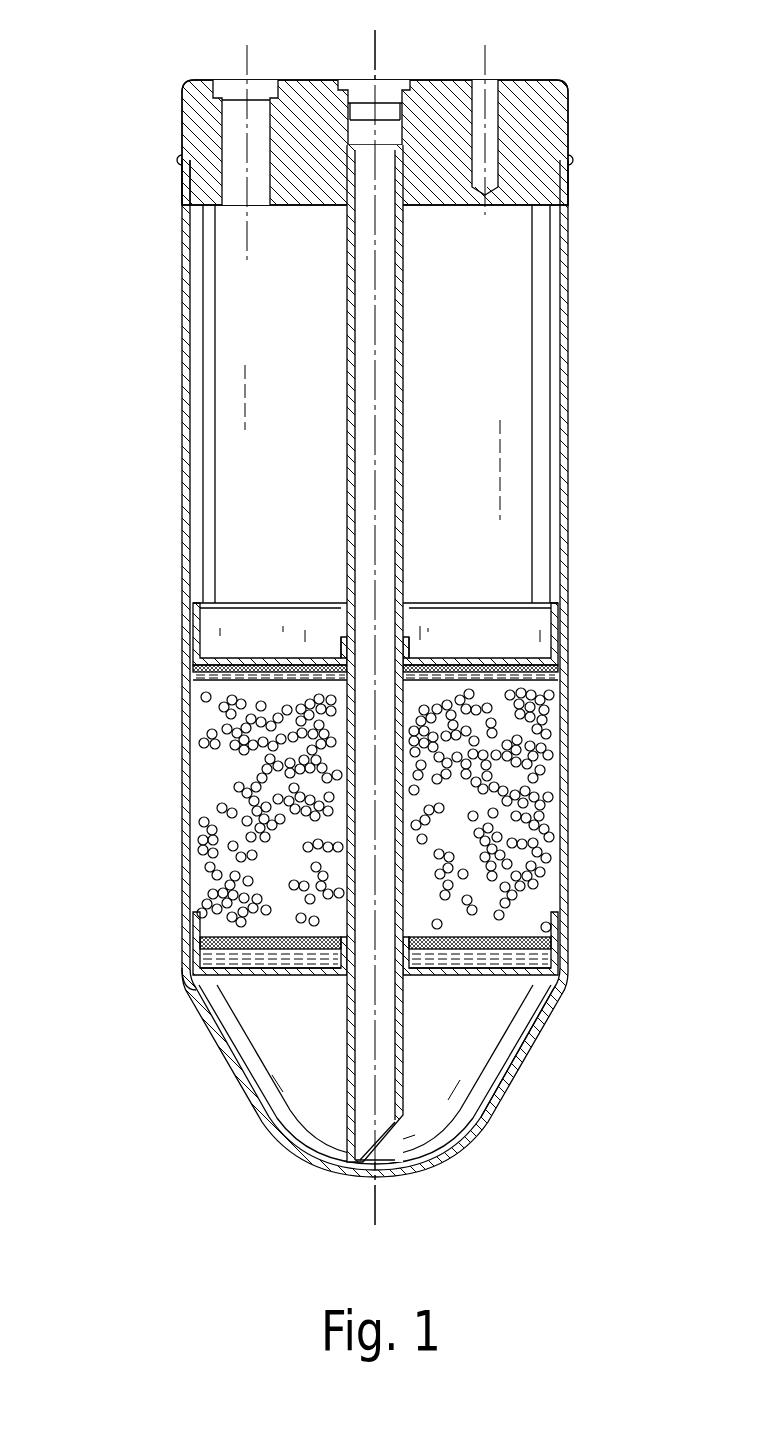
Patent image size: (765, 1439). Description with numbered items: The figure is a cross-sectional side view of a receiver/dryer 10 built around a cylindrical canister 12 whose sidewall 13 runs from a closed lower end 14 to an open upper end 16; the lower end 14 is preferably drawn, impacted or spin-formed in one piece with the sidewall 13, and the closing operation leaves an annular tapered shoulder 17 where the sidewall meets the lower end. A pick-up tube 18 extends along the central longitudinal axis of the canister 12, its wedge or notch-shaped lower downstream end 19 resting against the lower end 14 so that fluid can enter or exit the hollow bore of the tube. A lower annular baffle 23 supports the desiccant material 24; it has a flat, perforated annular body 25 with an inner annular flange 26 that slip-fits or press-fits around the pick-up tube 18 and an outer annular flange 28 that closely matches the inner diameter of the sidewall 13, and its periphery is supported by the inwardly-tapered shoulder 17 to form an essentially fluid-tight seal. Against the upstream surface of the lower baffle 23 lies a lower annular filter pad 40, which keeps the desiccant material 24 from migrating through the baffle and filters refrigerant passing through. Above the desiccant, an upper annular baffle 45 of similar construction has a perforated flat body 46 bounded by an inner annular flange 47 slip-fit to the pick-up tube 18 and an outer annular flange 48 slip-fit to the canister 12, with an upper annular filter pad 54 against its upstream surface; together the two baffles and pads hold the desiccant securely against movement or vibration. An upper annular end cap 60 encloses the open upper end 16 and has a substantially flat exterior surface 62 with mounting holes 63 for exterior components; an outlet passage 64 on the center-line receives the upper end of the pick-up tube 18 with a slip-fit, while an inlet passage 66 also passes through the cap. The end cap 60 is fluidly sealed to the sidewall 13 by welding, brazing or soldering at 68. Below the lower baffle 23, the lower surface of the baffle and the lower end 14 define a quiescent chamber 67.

The receiver/dryer 10 is at (100, 306).
The cylindrical canister 12 is at (185, 410).
The sidewall 13 is at (190, 518).
The lower closed end 14 is at (267, 1115).
The upper open end 16 is at (185, 193).
The annular tapered shoulder 17 is at (194, 990).
The pick-up tube 18 is at (350, 500).
The lower downstream end 19 is at (386, 1150).
The lower annular baffle 23 is at (290, 982).
The desiccant material 24 is at (556, 810).
The flat annular body 25 is at (498, 978).
The inner annular flange 26 is at (421, 963).
The outer annular flange 28 is at (195, 935).
The lower annular filter pad 40 is at (566, 955).
The upper annular baffle 45 is at (196, 636).
The perforated flat body 46 is at (458, 655).
The inner annular flange 47 is at (340, 652).
The outer annular flange 48 is at (194, 603).
The upper annular filter pad 54 is at (563, 672).
The upper annular end cap 60 is at (186, 106).
The flat exterior surface 62 is at (441, 80).
The mounting holes 63 is at (482, 80).
The outlet passage 64 is at (362, 80).
The inlet passage 66 is at (236, 110).
The quiescent chamber 67 is at (480, 1068).
The weld 68 is at (573, 157).